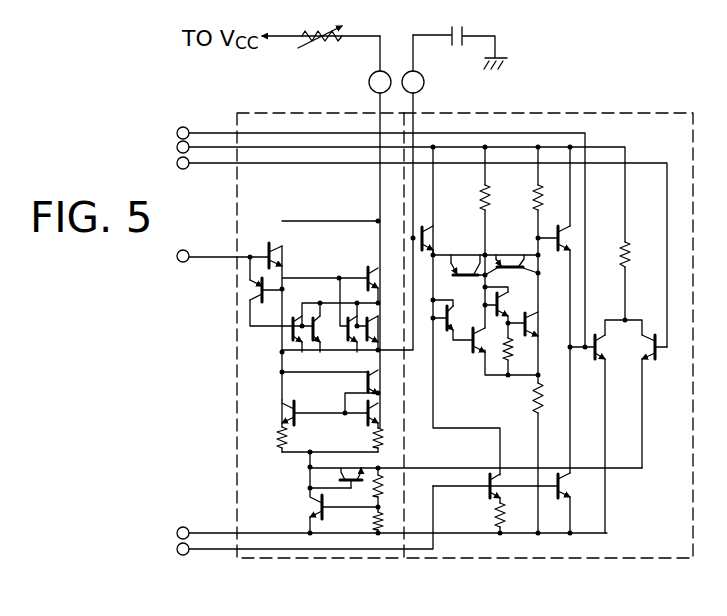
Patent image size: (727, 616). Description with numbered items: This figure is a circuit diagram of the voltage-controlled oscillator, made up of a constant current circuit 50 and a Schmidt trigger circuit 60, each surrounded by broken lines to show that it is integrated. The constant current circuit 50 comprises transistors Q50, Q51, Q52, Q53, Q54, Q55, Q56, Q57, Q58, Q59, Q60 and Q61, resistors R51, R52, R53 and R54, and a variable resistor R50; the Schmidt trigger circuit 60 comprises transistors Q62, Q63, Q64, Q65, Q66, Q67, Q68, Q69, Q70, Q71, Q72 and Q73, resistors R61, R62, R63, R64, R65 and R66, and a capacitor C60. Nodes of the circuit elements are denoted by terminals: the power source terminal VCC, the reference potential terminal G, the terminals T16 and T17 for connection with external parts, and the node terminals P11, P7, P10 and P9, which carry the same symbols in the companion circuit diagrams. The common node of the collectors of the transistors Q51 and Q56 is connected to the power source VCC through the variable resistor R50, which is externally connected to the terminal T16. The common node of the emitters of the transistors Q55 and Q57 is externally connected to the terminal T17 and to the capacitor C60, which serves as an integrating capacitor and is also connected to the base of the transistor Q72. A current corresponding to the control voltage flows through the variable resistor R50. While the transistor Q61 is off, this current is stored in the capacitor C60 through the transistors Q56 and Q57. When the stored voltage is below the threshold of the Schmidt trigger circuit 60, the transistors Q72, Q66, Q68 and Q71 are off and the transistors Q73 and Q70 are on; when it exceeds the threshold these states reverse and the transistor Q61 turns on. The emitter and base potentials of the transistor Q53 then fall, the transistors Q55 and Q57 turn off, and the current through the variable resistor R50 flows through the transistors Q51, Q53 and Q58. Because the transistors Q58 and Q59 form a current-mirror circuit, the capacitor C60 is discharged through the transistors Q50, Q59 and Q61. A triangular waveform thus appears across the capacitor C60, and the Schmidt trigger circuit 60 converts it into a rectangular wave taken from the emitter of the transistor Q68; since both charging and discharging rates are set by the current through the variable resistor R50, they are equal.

The constant current circuit 50 is at (268, 113).
The Schmidt trigger circuit 60 is at (626, 113).
The variable resistor R50 is at (322, 30).
The capacitor C60 is at (456, 28).
The terminal T16 is at (369, 85).
The terminal T17 is at (424, 85).
The pin P11 is at (183, 127).
The power source terminal VCC is at (177, 147).
The pin P7 is at (183, 169).
The pin P10 is at (184, 262).
The reference potential terminal G is at (186, 521).
The pin P9 is at (184, 555).
The transistor Q50 is at (369, 387).
The transistor Q51 is at (290, 264).
The transistor Q52 is at (255, 298).
The transistor Q53 is at (291, 330).
The transistor Q54 is at (311, 318).
The transistor Q55 is at (340, 328).
The transistor Q56 is at (370, 270).
The transistor Q57 is at (372, 344).
The transistor Q58 is at (290, 408).
The transistor Q59 is at (366, 405).
The transistor Q60 is at (362, 478).
The transistor Q61 is at (315, 503).
The resistor R51 is at (306, 440).
The resistor R52 is at (375, 434).
The resistor R53 is at (390, 478).
The resistor R54 is at (356, 522).
The resistor R61 is at (480, 196).
The resistor R62 is at (508, 362).
The resistor R63 is at (497, 518).
The resistor R64 is at (533, 400).
The resistor R65 is at (534, 196).
The resistor R66 is at (629, 252).
The transistor Q62 is at (466, 276).
The transistor Q63 is at (512, 264).
The transistor Q64 is at (472, 332).
The transistor Q65 is at (508, 300).
The transistor Q66 is at (461, 359).
The transistor Q67 is at (494, 495).
The transistor Q68 is at (560, 226).
The transistor Q69 is at (570, 488).
The transistor Q70 is at (605, 345).
The transistor Q71 is at (641, 350).
The transistor Q72 is at (424, 236).
The transistor Q73 is at (528, 322).